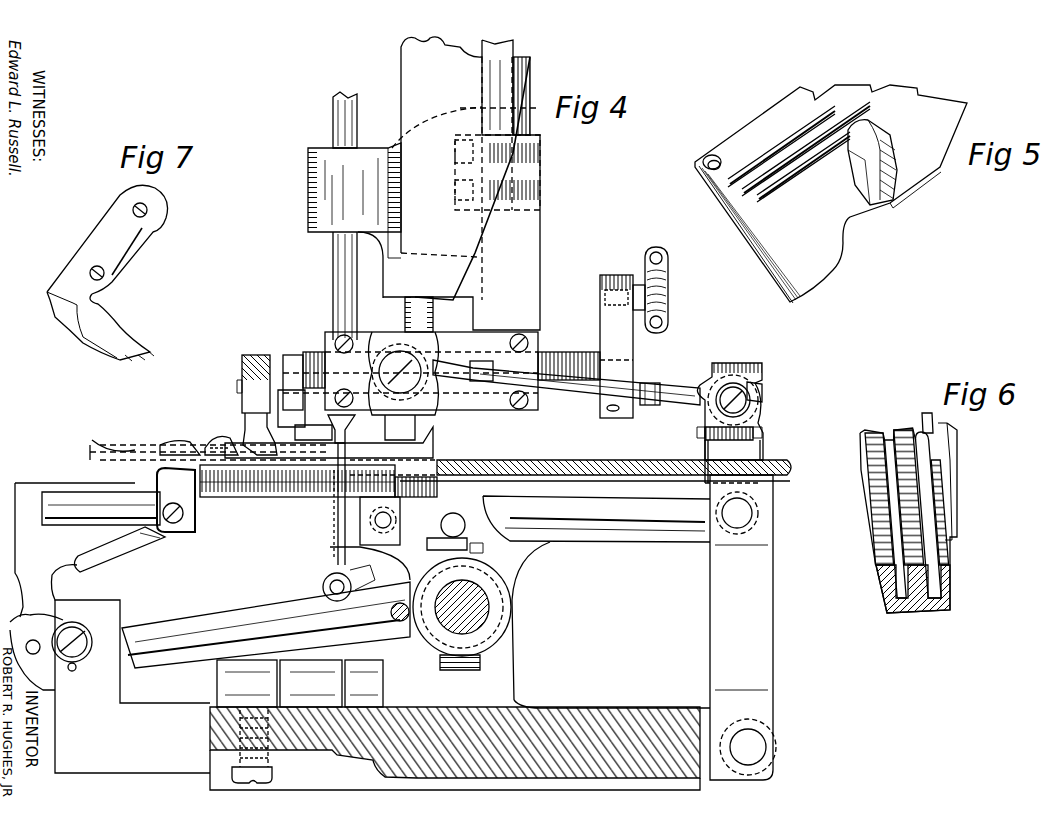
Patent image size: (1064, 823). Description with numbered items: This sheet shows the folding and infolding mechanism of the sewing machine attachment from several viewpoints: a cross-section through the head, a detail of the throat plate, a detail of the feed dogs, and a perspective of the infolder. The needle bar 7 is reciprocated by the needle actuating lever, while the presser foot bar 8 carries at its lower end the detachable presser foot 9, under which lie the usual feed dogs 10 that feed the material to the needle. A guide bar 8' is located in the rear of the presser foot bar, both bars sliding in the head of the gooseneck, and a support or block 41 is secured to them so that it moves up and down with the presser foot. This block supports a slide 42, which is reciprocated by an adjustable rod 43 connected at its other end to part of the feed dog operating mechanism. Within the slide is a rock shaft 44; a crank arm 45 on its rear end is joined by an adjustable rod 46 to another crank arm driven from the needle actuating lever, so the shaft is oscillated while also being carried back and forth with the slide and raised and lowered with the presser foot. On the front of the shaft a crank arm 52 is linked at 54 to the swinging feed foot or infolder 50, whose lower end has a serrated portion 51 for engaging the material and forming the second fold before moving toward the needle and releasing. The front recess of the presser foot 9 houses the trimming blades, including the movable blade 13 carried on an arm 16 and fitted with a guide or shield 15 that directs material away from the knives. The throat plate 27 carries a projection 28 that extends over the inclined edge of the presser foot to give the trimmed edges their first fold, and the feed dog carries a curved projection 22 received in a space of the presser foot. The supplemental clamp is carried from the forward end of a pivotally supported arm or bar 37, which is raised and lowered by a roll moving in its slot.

In FIG. 4, the needle bar 7 is at (333, 268).
In FIG. 4, the presser foot bar 8 is at (435, 314).
In FIG. 4, the guide bar 8' is at (522, 86).
In FIG. 4, the support or block 41 is at (535, 222).
In FIG. 4, the slide 42 is at (548, 352).
In FIG. 4, the adjustable rod 43 is at (645, 400).
In FIG. 4, the rock shaft 44 is at (640, 375).
In FIG. 4, the crank arm 45 is at (630, 340).
In FIG. 4, the adjustable rod 46 is at (668, 278).
In FIG. 4, the pivotally supported arm or bar 37 is at (243, 358).
In FIG. 4, the crank arm 52 is at (287, 353).
In FIG. 4, the presser foot 9 is at (95, 440).
In FIG. 4, the movable blade 13 is at (178, 442).
In FIG. 5, the projection 28 is at (880, 170).
In FIG. 4, the projection 28 is at (215, 440).
In FIG. 4, the arm 16 is at (55, 500).
In FIG. 4, the guide or shield 15 is at (198, 512).
In FIG. 6, the feed dogs 10 is at (957, 567).
In FIG. 4, the feed dogs 10 is at (270, 497).
In FIG. 6, the curved projection 22 is at (949, 458).
In FIG. 4, the curved projection 22 is at (315, 497).
In FIG. 7, the swinging feed foot or infolder 50 is at (82, 252).
In FIG. 7, the connection point on infolder 54 is at (112, 283).
In FIG. 7, the serrated portion 51 is at (137, 360).
In FIG. 5, the throat plate 27 is at (837, 197).